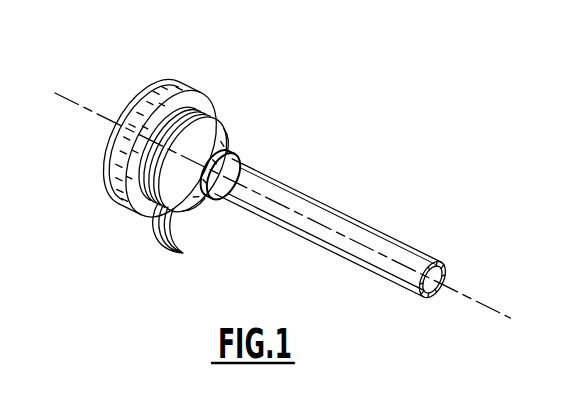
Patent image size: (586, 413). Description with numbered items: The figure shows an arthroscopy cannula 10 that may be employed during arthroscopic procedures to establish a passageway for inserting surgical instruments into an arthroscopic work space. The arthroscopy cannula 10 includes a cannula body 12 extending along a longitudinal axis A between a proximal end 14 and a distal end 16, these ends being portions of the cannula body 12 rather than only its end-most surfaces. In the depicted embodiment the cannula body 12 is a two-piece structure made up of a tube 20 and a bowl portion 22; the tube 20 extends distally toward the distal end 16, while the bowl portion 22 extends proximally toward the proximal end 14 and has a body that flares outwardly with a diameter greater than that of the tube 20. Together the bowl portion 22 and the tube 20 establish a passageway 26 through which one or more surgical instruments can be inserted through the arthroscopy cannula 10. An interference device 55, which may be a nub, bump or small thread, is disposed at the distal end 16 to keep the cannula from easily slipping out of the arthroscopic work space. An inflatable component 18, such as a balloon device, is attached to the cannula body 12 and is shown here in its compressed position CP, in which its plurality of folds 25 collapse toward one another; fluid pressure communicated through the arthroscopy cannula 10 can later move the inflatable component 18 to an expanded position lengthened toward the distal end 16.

The arthroscopy cannula 10 is at (352, 160).
The cannula body 12 is at (268, 173).
The proximal end 14 is at (193, 70).
The distal end 16 is at (423, 230).
The inflatable component 18 is at (199, 108).
The tube 20 is at (370, 272).
The bowl portion 22 is at (165, 90).
The folds 25 is at (183, 235).
The passageway 26 is at (435, 289).
The interference device 55 is at (442, 261).
The longitudinal axis A is at (60, 96).
The compressed position CP is at (153, 278).